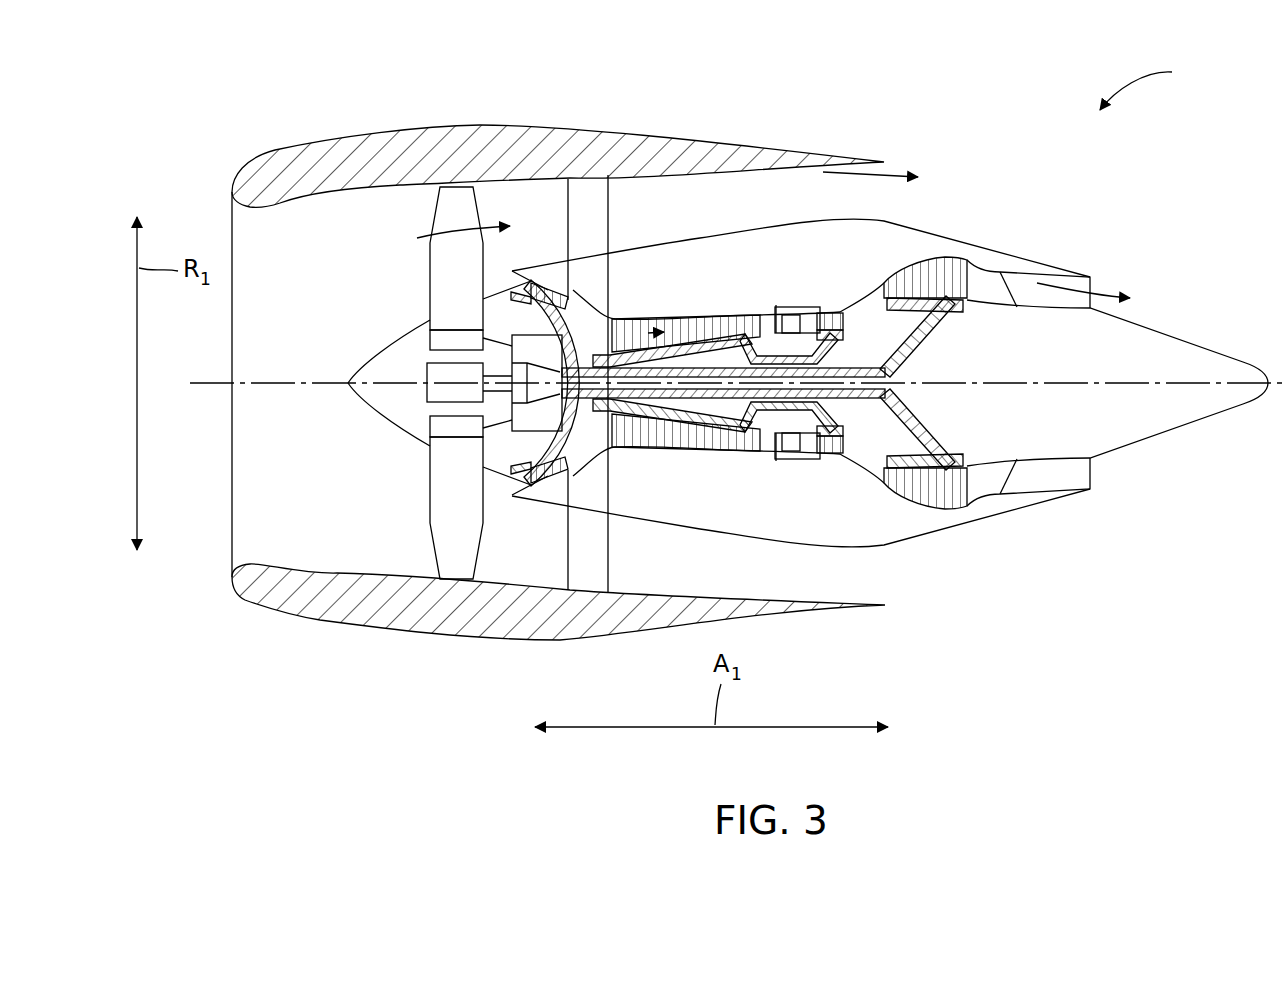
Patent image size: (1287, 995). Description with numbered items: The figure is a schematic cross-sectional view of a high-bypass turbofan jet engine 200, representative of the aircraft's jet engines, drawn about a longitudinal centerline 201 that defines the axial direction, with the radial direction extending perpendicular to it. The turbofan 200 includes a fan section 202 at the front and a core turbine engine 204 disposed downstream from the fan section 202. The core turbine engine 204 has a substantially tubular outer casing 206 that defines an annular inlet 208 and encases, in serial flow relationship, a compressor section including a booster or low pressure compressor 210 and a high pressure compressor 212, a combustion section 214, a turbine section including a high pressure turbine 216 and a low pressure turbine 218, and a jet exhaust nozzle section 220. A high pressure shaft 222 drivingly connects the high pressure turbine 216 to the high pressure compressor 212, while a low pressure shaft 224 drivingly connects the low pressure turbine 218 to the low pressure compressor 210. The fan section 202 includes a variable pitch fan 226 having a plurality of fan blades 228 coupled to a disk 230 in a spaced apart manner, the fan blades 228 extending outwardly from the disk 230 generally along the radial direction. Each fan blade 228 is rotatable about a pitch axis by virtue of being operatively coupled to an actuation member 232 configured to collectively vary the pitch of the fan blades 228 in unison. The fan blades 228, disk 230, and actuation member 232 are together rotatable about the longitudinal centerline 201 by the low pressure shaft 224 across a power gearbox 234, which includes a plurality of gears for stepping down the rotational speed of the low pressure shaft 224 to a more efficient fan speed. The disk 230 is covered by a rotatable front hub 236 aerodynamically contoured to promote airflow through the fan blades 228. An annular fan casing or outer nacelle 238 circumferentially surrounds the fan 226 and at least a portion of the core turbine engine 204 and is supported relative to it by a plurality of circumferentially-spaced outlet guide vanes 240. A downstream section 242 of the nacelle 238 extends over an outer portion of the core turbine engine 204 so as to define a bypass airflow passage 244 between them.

The high-bypass turbofan jet engine 200 is at (1160, 85).
The longitudinal centerline 201 is at (1040, 382).
The fan section 202 is at (388, 247).
The core turbine engine 204 is at (745, 257).
The outer casing 206 is at (805, 552).
The annular inlet 208 is at (524, 481).
The low pressure compressor 210 is at (558, 491).
The high pressure compressor 212 is at (630, 450).
The combustion section 214 is at (794, 446).
The high pressure turbine 216 is at (863, 442).
The low pressure turbine 218 is at (943, 510).
The jet exhaust nozzle section 220 is at (1022, 479).
The high pressure shaft 222 is at (790, 347).
The low pressure shaft 224 is at (893, 366).
The variable pitch fan 226 is at (388, 428).
The fan blades 228 is at (432, 539).
The disk 230 is at (440, 336).
The actuation member 232 is at (432, 372).
The power gearbox 234 is at (580, 340).
The front hub 236 is at (428, 437).
The outer nacelle 238 is at (453, 650).
The outlet guide vanes 240 is at (608, 211).
The downstream section 242 is at (837, 130).
The bypass airflow passage 244 is at (831, 205).